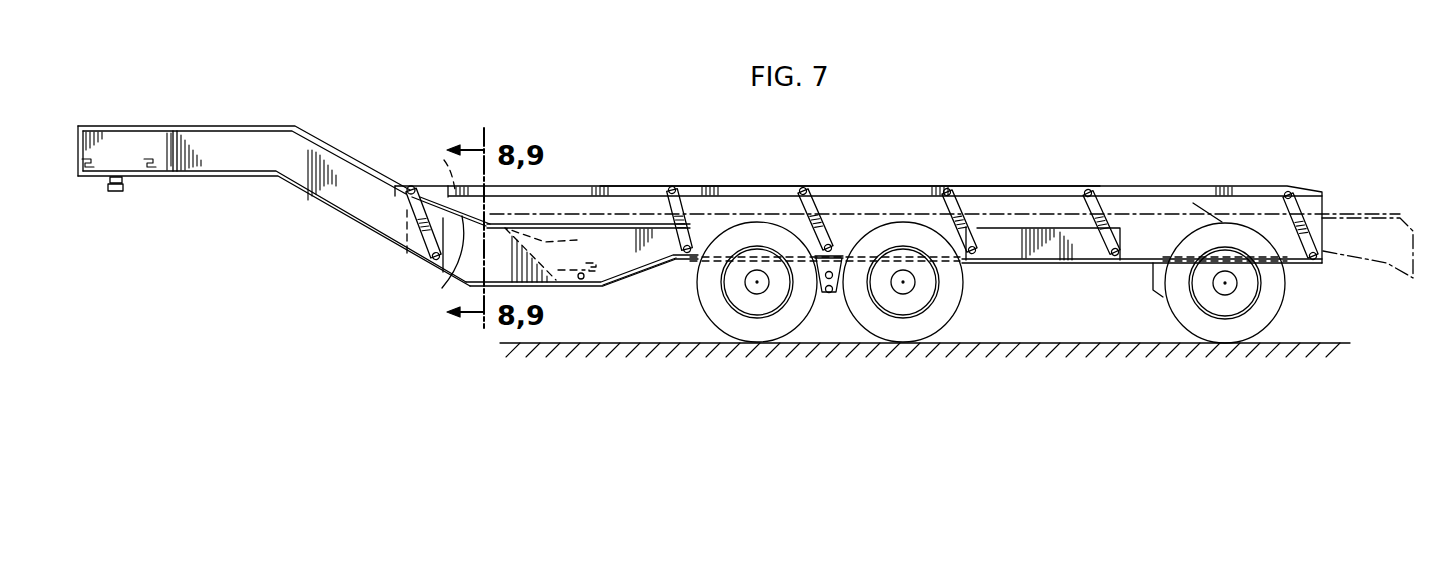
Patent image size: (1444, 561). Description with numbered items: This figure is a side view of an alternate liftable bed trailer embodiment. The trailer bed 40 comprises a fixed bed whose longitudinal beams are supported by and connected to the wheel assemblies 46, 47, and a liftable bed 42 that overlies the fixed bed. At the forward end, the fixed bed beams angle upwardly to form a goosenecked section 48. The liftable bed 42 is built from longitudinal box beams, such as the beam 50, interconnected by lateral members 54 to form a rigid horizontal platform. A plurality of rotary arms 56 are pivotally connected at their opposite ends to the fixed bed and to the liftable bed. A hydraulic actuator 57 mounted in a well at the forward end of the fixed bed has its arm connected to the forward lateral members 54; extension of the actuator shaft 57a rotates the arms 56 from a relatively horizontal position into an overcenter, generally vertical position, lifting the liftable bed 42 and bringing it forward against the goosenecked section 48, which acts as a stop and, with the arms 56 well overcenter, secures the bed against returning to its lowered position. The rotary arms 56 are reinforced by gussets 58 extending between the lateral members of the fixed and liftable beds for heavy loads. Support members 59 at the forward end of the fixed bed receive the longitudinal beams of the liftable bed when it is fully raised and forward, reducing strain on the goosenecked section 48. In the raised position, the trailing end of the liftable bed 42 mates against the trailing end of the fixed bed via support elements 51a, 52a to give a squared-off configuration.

The bed 40 is at (668, 270).
The liftable bed 42 is at (597, 182).
The wheel assembly 46 is at (972, 297).
The wheel assembly 47 is at (695, 315).
The goosenecked section 48 is at (335, 205).
The longitudinal box beam 50 is at (848, 190).
The support element 51a is at (1387, 266).
The support element 52a is at (1277, 160).
The lateral member 54 is at (409, 187).
The rotary arm 56 is at (408, 206).
The hydraulic actuator 57 is at (558, 252).
The actuator shaft 57a is at (429, 166).
The gusset 58 is at (420, 238).
The support member 59 is at (438, 262).